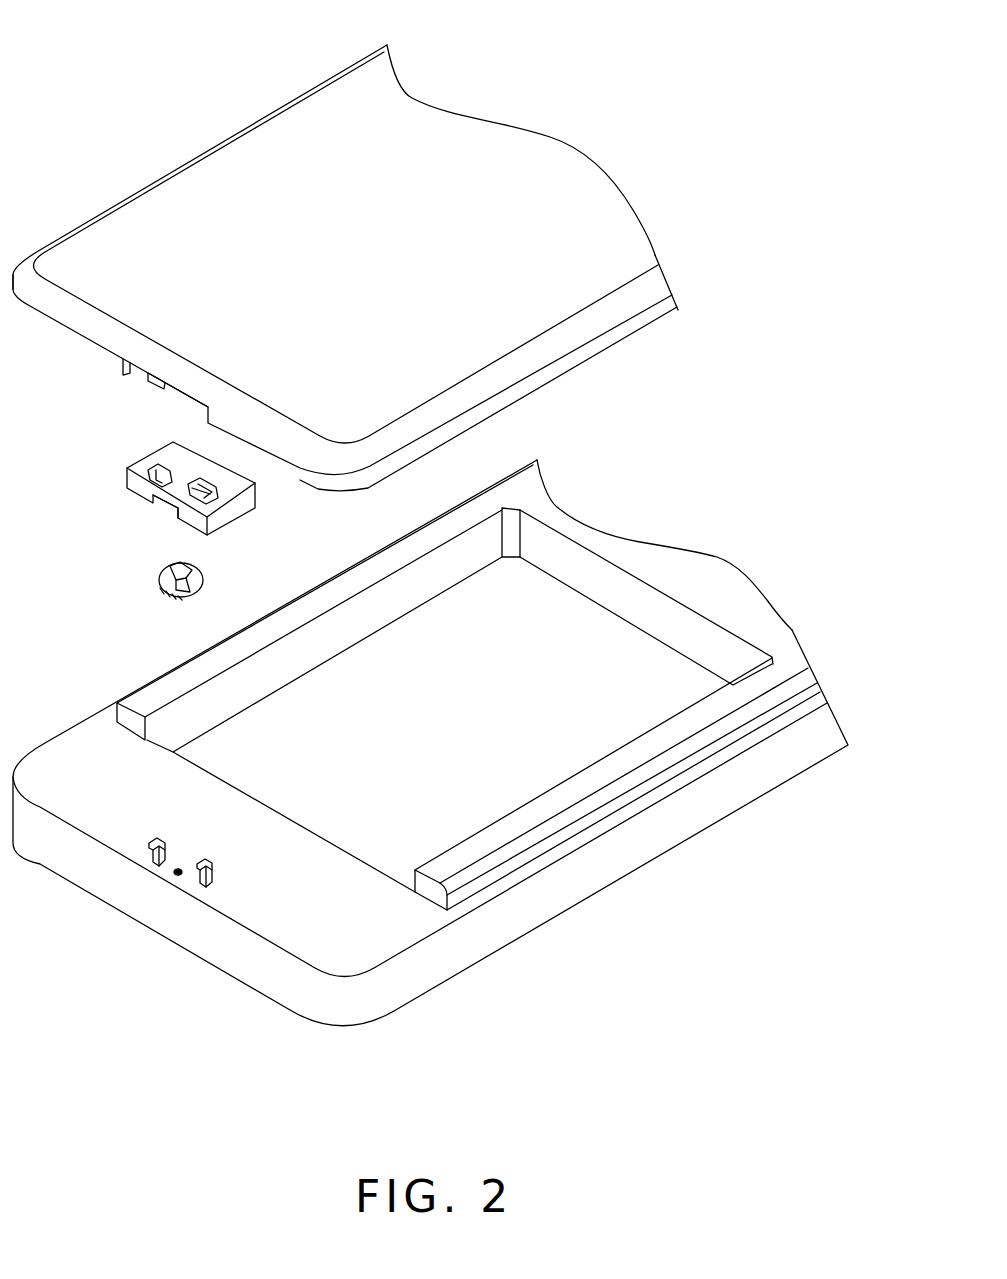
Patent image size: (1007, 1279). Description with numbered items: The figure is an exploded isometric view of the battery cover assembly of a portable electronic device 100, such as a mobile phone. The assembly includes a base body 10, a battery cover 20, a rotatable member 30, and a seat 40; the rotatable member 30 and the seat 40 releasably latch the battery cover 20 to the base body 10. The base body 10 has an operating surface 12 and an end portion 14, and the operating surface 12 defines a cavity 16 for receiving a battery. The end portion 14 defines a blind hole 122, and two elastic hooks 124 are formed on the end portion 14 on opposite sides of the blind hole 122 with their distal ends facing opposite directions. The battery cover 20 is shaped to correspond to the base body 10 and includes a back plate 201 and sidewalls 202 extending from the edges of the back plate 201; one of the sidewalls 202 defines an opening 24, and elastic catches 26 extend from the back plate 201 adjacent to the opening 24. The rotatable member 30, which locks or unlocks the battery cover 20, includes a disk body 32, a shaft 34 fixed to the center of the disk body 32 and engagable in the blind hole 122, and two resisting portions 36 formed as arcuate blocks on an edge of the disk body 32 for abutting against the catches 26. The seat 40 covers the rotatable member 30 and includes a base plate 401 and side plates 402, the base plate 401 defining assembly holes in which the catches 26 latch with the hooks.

The portable electronic device 100 is at (168, 79).
The battery cover 20 is at (118, 174).
The back plate 201 is at (392, 133).
The sidewalls 202 is at (62, 305).
The opening 24 is at (182, 398).
The elastic catches 26 is at (152, 381).
The base body 10 is at (74, 719).
The operating surface 12 is at (731, 583).
The end portion 14 is at (242, 955).
The cavity 16 is at (548, 738).
The blind hole 122 is at (175, 875).
The elastic hooks 124 is at (198, 888).
The seat 40 is at (102, 497).
The base plate 401 is at (250, 486).
The side plates 402 is at (256, 508).
The rotatable member 30 is at (133, 578).
The disk body 32 is at (157, 595).
The shaft 34 is at (188, 566).
The resisting portions 36 is at (201, 595).